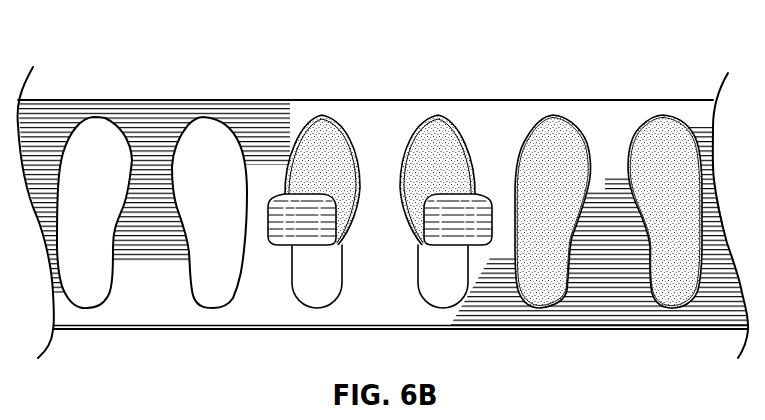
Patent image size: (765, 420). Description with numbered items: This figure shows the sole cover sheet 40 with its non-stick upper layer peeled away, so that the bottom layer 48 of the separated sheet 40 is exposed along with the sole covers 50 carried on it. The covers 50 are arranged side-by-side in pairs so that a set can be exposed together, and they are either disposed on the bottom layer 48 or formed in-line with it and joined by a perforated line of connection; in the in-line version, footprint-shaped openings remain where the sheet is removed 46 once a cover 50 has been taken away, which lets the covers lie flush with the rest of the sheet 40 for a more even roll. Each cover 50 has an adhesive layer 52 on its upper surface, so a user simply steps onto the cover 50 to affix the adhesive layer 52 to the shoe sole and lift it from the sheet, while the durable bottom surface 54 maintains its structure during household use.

The sole cover sheet 40 is at (456, 76).
The removed sheet portion 46 is at (90, 132).
The bottom layer 48 is at (382, 113).
The sole cover 50 is at (541, 277).
The adhesive layer 52 is at (328, 130).
The bottom surface 54 is at (293, 233).